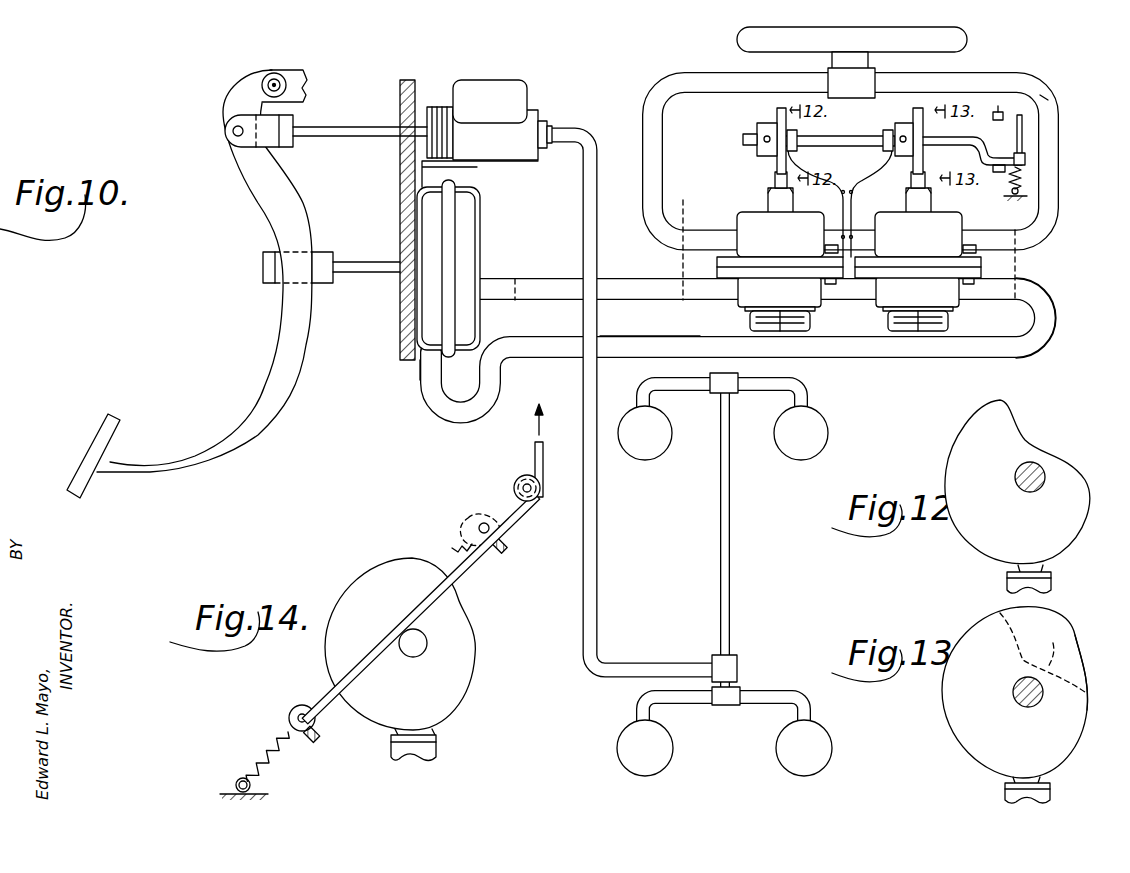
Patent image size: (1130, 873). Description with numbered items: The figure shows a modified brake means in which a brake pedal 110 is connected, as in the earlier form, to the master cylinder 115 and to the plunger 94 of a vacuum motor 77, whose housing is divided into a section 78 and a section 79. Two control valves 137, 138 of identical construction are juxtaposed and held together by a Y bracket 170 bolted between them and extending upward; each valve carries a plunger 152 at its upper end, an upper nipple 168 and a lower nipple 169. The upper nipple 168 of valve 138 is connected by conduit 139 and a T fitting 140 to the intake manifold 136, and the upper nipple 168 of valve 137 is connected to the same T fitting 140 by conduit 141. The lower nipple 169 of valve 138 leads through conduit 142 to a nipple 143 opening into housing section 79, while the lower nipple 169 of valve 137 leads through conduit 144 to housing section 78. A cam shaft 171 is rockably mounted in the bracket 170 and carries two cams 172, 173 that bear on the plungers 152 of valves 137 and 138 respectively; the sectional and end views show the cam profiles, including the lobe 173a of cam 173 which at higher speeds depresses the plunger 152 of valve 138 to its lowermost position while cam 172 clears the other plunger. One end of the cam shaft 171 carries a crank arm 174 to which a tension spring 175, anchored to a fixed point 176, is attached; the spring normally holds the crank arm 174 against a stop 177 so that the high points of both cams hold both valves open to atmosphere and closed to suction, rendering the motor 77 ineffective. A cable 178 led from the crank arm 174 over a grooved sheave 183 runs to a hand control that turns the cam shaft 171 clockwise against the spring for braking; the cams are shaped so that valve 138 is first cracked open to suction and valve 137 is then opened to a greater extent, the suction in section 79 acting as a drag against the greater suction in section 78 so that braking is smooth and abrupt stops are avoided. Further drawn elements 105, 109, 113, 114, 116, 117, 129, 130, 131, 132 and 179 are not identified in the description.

In FIG. 10, the motor 77 is at (482, 208).
In FIG. 10, the housing section 78 is at (468, 235).
In FIG. 10, the housing section 79 is at (425, 208).
In FIG. 10, the plunger 94 is at (383, 274).
In FIG. 10, the vacuum conduit 105 is at (505, 284).
In FIG. 10, the partition wall 109 is at (402, 340).
In FIG. 10, the brake pedal 110 is at (268, 352).
In FIG. 10, the pedal pivot 113 is at (268, 78).
In FIG. 10, the clevis link 114 is at (231, 131).
In FIG. 10, the master cylinder 115 is at (502, 148).
In FIG. 10, the coupling block 116 is at (335, 258).
In FIG. 10, the pin 117 is at (262, 268).
In FIG. 10, the conduit 129 is at (598, 245).
In FIG. 10, the distribution conduit 130 is at (720, 537).
In FIG. 10, the T fitting 131 is at (763, 387).
In FIG. 10, the bulb 132 is at (645, 452).
In FIG. 10, the intake manifold 136 is at (737, 39).
In FIG. 10, the control valve 137 is at (748, 207).
In FIG. 10, the control valve 138 is at (936, 223).
In FIG. 10, the conduit 139 is at (1055, 107).
In FIG. 10, the T fitting 140 is at (867, 73).
In FIG. 10, the conduit 141 is at (650, 88).
In FIG. 10, the conduit 142 is at (912, 350).
In FIG. 10, the nipple 143 is at (432, 378).
In FIG. 10, the conduit 144 is at (643, 290).
In FIG. 10, the plunger 152 is at (790, 191).
In FIG. 14, the plunger 152 is at (437, 747).
In FIG. 12, the plunger 152 is at (1051, 581).
In FIG. 13, the plunger 152 is at (1052, 795).
In FIG. 10, the nipple 168 is at (705, 238).
In FIG. 10, the nipple 169 is at (712, 298).
In FIG. 10, the Y bracket 170 is at (858, 170).
In FIG. 10, the cam shaft 171 is at (840, 140).
In FIG. 14, the cam shaft 171 is at (428, 643).
In FIG. 12, the cam shaft 171 is at (1028, 494).
In FIG. 13, the cam shaft 171 is at (1026, 710).
In FIG. 10, the cam 172 is at (775, 110).
In FIG. 12, the cam 172 is at (975, 438).
In FIG. 13, the cam 172 is at (1050, 662).
In FIG. 10, the cam 173 is at (913, 110).
In FIG. 14, the cam 173 is at (395, 565).
In FIG. 13, the cam 173 is at (952, 720).
In FIG. 13, the lobe 173a is at (1078, 634).
In FIG. 10, the crank arm 174 is at (1024, 152).
In FIG. 14, the crank arm 174 is at (468, 523).
In FIG. 10, the tension spring 175 is at (1024, 178).
In FIG. 14, the tension spring 175 is at (462, 548).
In FIG. 10, the fixed point 176 is at (1027, 197).
In FIG. 14, the fixed point 176 is at (238, 784).
In FIG. 10, the stop 177 is at (1012, 190).
In FIG. 14, the stop 177 is at (320, 745).
In FIG. 10, the cable 178 is at (1023, 128).
In FIG. 14, the cable 178 is at (535, 455).
In FIG. 10, the switch 179 is at (999, 106).
In FIG. 14, the switch 179 is at (502, 550).
In FIG. 14, the grooved sheave 183 is at (514, 485).